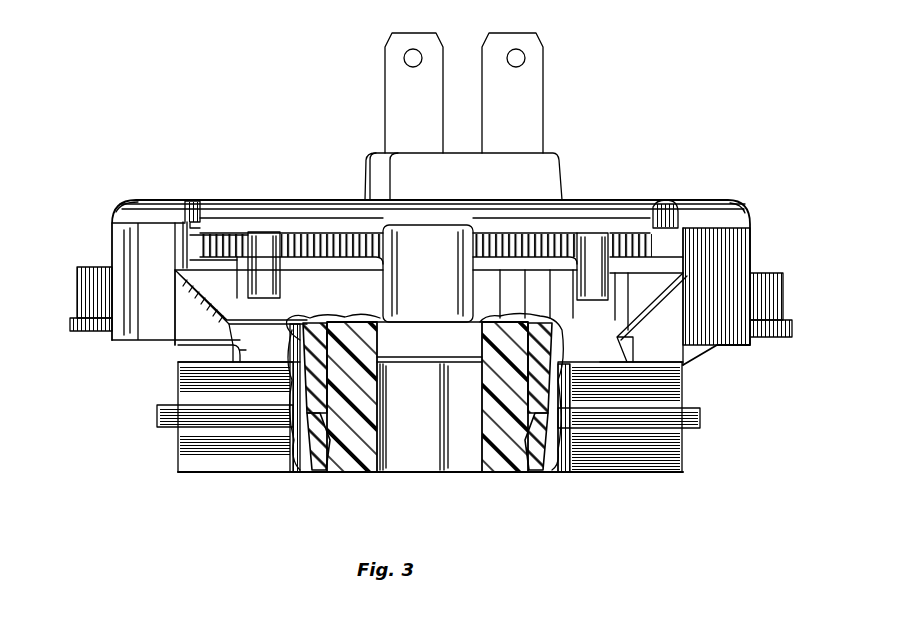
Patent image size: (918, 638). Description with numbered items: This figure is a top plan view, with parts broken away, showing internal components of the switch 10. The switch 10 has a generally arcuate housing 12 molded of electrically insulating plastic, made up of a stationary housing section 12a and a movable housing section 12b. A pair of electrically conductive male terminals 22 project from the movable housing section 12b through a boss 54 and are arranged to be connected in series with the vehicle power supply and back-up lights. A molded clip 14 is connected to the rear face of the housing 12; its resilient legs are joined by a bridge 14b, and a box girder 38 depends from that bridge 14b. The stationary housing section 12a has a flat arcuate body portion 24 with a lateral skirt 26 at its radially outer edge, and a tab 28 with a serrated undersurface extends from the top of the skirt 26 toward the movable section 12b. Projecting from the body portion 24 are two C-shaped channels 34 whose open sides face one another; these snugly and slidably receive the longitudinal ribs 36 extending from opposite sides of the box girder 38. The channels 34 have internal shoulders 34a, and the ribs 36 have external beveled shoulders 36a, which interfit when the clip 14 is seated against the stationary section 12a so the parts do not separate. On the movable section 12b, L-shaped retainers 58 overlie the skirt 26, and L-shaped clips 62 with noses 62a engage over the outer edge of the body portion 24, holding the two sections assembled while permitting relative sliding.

The switch 10 is at (126, 464).
The housing 12 is at (110, 204).
The stationary housing section 12a is at (702, 362).
The movable housing section 12b is at (634, 196).
The clip 14 is at (206, 458).
The bridge 14b is at (620, 460).
The male terminals 22 is at (384, 42).
The body portion 24 is at (182, 382).
The skirt 26 is at (222, 277).
The tab 28 is at (388, 234).
The channels 34 is at (318, 452).
The internal shoulders 34a is at (302, 428).
The ribs 36 is at (358, 447).
The beveled shoulders 36a is at (554, 509).
The box girder 38 is at (409, 460).
The boss 54 is at (540, 167).
The retainers 58 is at (268, 279).
The clips 62 is at (187, 343).
The noses 62a is at (679, 352).